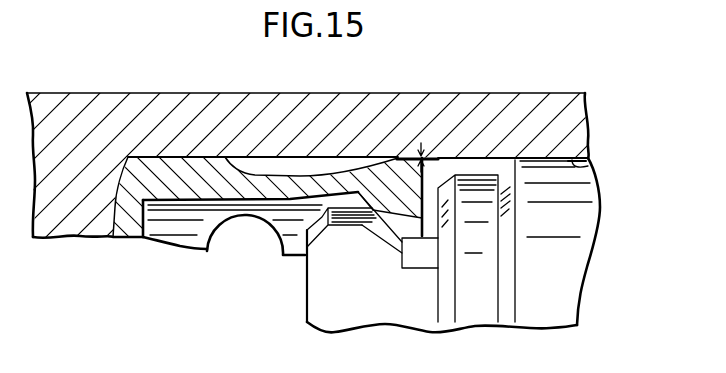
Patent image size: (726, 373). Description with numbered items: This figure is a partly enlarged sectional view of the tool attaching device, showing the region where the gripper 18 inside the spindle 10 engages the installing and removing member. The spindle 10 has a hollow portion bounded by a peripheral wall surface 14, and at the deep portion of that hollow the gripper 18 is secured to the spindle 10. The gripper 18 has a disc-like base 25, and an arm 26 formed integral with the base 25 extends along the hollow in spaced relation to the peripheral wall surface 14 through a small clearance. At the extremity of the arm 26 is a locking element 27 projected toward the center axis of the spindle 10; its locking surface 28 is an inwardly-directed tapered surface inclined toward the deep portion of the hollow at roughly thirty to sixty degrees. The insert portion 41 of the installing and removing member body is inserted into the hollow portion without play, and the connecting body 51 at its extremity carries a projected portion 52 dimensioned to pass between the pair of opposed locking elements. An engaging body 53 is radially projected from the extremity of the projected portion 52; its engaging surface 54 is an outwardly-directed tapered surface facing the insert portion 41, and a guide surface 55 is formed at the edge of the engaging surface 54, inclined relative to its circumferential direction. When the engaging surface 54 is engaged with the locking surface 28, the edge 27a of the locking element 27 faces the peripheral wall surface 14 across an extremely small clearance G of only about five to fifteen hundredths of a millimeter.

The spindle 10 is at (576, 123).
The peripheral wall surface 14 is at (588, 165).
The gripper 18 is at (151, 144).
The base 25 is at (120, 170).
The arm 26 is at (265, 183).
The locking element 27 is at (398, 159).
The edge 27a is at (398, 159).
The clearance G is at (425, 155).
The locking surface 28 is at (358, 192).
The insert portion 41 is at (582, 211).
The connecting body 51 is at (306, 272).
The projected portion 52 is at (320, 292).
The engaging body 53 is at (345, 222).
The engaging surface 54 is at (395, 268).
The guide surface 55 is at (380, 240).